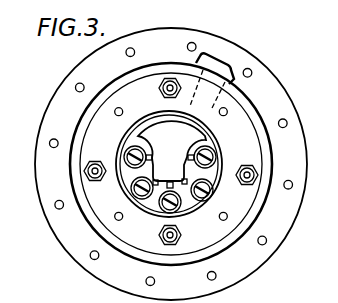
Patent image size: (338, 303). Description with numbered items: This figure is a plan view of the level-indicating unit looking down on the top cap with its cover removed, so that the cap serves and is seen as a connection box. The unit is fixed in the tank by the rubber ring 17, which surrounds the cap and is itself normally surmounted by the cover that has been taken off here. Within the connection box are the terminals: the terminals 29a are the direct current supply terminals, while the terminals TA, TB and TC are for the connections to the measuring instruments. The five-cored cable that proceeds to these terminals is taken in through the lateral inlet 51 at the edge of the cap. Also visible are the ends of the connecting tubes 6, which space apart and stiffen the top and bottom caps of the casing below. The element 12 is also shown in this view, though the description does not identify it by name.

The mounting plate 12 is at (180, 165).
The rubber ring 17 is at (278, 218).
The lateral inlet 51 is at (222, 62).
The connecting tubes 6 is at (168, 78).
The direct current supply terminals 29a is at (128, 148).
The terminal TA is at (132, 192).
The terminal TB is at (161, 210).
The terminal TC is at (197, 205).